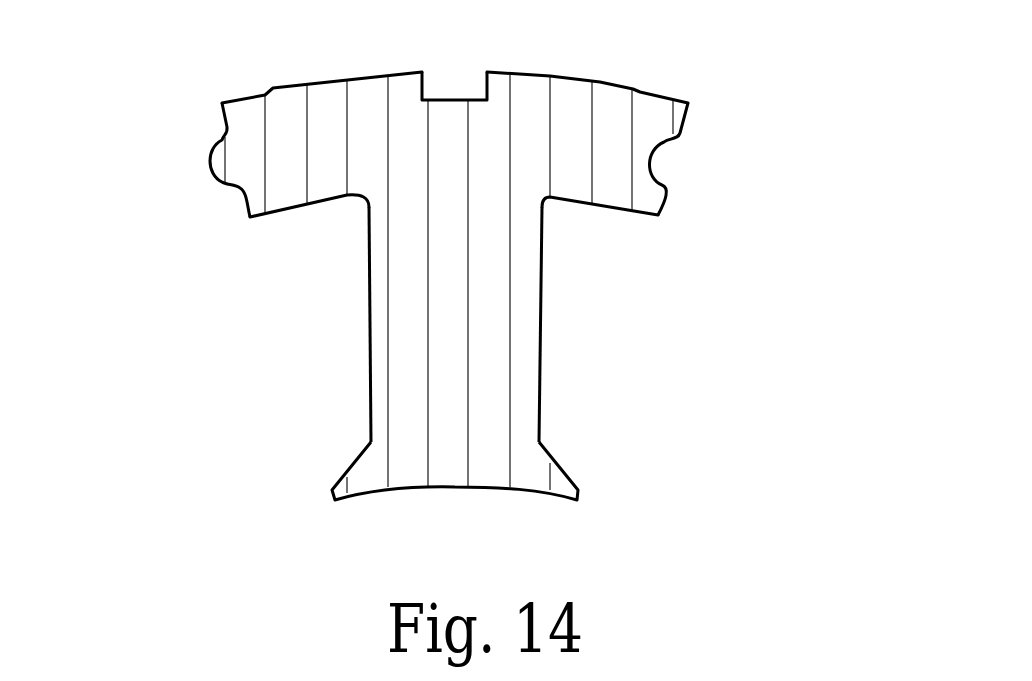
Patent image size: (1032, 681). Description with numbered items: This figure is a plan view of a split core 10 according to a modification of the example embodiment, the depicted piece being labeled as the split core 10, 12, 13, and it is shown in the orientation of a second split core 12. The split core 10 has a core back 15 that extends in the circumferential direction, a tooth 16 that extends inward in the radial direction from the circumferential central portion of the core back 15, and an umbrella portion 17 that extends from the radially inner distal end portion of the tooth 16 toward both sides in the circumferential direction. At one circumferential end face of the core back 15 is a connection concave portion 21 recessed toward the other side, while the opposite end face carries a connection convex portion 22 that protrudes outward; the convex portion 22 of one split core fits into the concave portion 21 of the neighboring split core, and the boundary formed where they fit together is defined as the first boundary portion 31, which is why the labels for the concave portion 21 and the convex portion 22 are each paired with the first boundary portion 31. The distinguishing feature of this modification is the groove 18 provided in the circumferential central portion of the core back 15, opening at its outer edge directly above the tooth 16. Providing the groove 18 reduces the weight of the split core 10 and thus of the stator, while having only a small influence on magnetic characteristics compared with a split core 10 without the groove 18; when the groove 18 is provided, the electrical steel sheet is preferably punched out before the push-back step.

The split core 10 is at (485, 255).
The second split core 12 is at (485, 255).
The clip member 13 is at (485, 255).
The core back 15 is at (562, 133).
The tooth 16 is at (510, 327).
The umbrella portion 17 is at (555, 483).
The groove 18 is at (452, 100).
The connection concave portion 21 is at (650, 165).
The connection convex portion 22 is at (208, 159).
The first boundary portion 31 is at (432, 160).